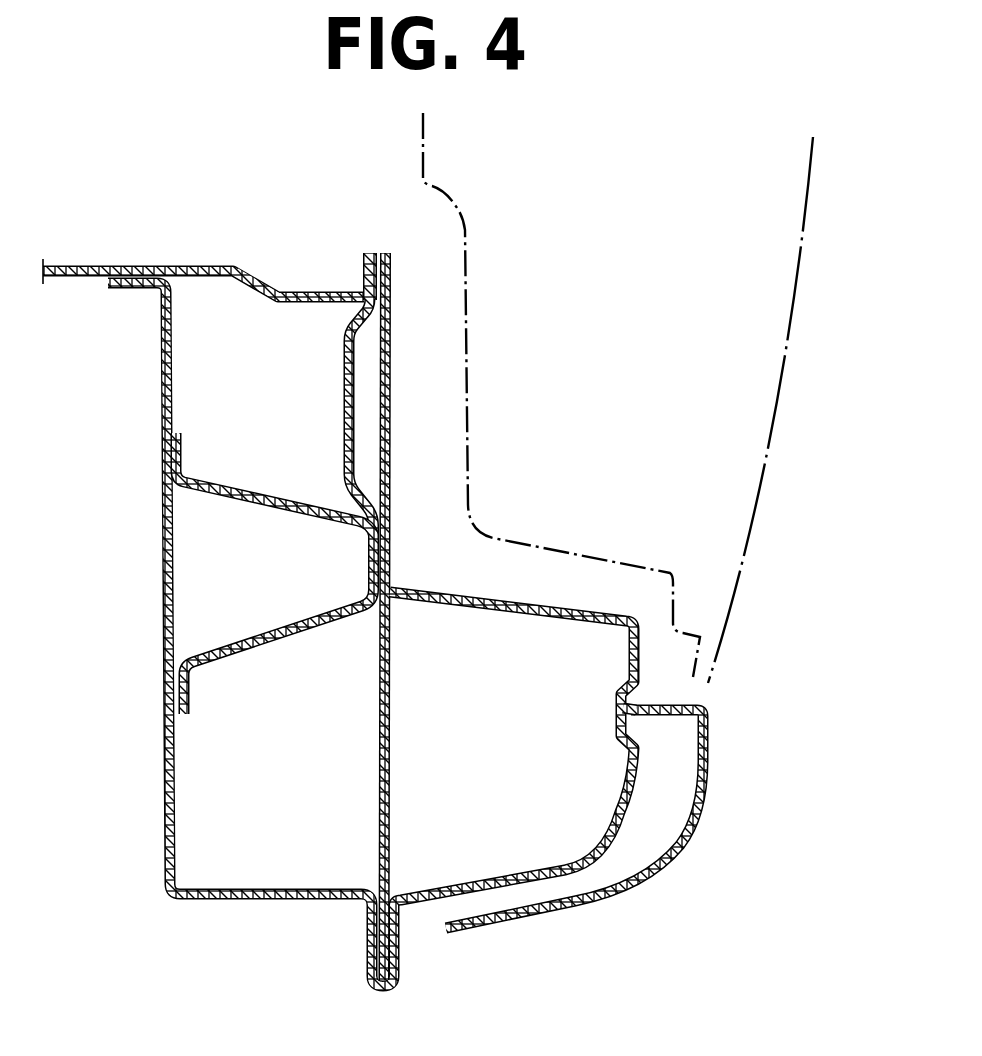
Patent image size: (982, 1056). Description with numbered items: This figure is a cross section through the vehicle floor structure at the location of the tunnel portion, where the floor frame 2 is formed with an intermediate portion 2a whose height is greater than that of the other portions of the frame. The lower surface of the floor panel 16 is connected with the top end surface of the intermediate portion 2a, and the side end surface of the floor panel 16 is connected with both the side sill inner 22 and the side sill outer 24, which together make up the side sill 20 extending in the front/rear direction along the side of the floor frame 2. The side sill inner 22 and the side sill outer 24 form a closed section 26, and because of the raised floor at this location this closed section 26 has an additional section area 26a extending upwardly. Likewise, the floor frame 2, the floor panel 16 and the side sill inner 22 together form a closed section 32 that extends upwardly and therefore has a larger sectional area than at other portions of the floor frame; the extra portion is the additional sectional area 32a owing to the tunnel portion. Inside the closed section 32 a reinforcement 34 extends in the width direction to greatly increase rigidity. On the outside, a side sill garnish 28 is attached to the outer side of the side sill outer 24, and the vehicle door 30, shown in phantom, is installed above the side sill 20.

The floor frame 2 is at (231, 642).
The intermediate portion 2a is at (158, 390).
The floor panel 16 is at (203, 246).
The side sill 20 is at (634, 855).
The side sill inner 22 is at (377, 824).
The side sill outer 24 is at (640, 775).
The closed section 26 is at (488, 848).
The additional section area 26a is at (370, 408).
The side sill garnish 28 is at (577, 910).
The vehicle door 30 is at (780, 404).
The closed section 32 is at (257, 864).
The additional sectional area 32a is at (243, 298).
The reinforcement 34 is at (248, 636).